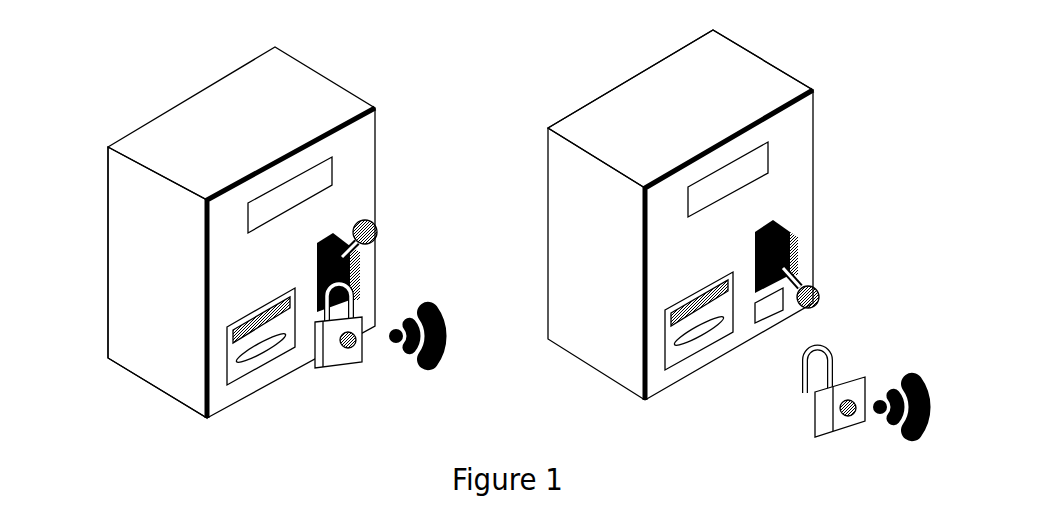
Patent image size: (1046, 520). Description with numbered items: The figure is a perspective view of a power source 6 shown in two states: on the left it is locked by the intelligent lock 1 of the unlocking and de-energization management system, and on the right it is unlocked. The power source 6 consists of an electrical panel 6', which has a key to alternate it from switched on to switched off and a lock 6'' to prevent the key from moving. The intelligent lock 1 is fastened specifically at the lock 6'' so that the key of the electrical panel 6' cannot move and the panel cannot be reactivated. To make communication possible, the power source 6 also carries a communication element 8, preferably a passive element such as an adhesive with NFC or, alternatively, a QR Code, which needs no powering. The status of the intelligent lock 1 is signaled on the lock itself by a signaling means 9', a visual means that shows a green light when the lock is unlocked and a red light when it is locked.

The intelligent lock 1 is at (307, 372).
The power source 6 is at (455, 218).
The electrical panel 6' is at (456, 219).
The lock 6'' is at (601, 214).
The communication element 8 is at (769, 312).
The signaling means 9' is at (644, 334).